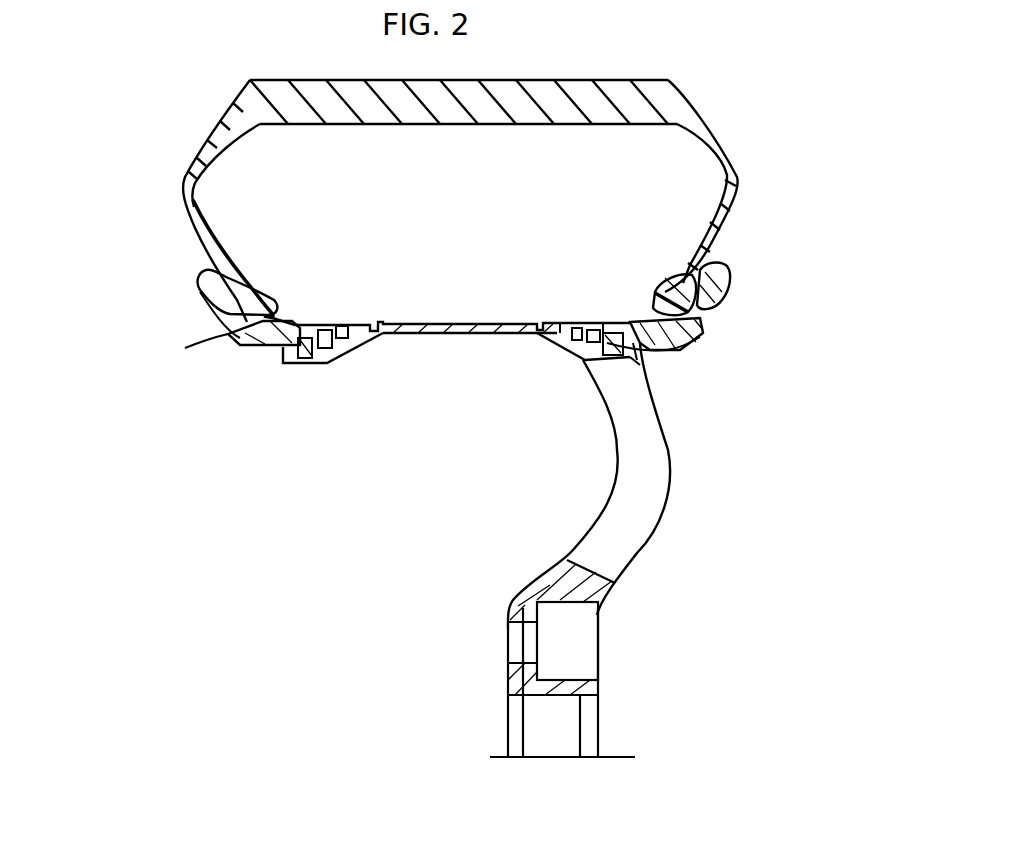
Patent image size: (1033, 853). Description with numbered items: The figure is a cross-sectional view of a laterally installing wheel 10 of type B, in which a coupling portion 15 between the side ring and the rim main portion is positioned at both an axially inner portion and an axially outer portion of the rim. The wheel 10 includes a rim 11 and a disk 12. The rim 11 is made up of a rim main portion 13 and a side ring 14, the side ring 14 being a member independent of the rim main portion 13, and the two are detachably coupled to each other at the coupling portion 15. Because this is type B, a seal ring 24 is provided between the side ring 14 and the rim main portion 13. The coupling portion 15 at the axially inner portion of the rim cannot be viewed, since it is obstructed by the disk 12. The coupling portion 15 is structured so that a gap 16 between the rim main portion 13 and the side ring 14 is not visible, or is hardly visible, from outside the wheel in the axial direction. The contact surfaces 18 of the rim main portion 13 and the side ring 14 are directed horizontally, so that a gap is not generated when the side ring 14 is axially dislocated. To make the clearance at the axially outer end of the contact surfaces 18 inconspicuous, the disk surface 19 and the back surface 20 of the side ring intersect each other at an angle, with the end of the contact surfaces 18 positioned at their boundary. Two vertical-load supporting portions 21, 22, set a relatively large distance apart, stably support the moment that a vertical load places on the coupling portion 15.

The laterally installing wheel 10 is at (195, 263).
The rim 11 is at (475, 322).
The disk 12 is at (587, 587).
The rim main portion 13 is at (417, 334).
The side ring 14 is at (207, 285).
The coupling portion 15 is at (340, 363).
The gap 16 is at (647, 346).
The contact surfaces 18 is at (242, 335).
The disk surface 19 is at (647, 348).
The back surface of the side ring 20 is at (273, 350).
The vertical-load supporting portion 21 is at (560, 322).
The vertical-load supporting portion 22 is at (645, 355).
The seal ring 24 is at (612, 326).